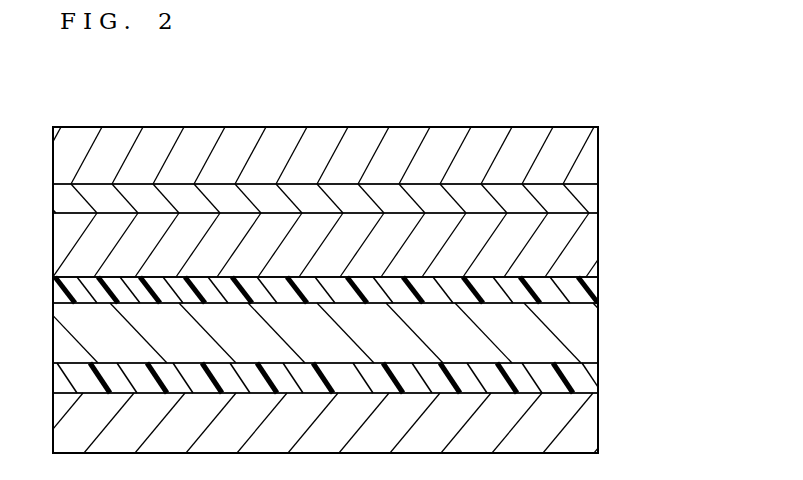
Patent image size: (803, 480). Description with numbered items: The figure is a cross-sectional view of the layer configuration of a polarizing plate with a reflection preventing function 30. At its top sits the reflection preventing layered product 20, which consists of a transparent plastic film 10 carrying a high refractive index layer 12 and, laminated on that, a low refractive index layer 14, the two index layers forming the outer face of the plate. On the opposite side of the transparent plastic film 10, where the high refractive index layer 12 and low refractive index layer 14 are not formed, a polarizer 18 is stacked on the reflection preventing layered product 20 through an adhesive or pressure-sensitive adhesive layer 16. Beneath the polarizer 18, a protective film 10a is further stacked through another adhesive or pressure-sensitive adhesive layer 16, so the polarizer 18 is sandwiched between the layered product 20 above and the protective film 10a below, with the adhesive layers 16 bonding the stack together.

The polarizing plate with a reflection preventing function 30 is at (498, 123).
The reflection preventing layered product 20 is at (655, 143).
The low refractive index layer 14 is at (597, 158).
The high refractive index layer 12 is at (587, 197).
The transparent plastic film 10 is at (588, 232).
The adhesive or pressure-sensitive adhesive layer 16 is at (595, 287).
The polarizer 18 is at (587, 330).
The protective film 10a is at (587, 420).